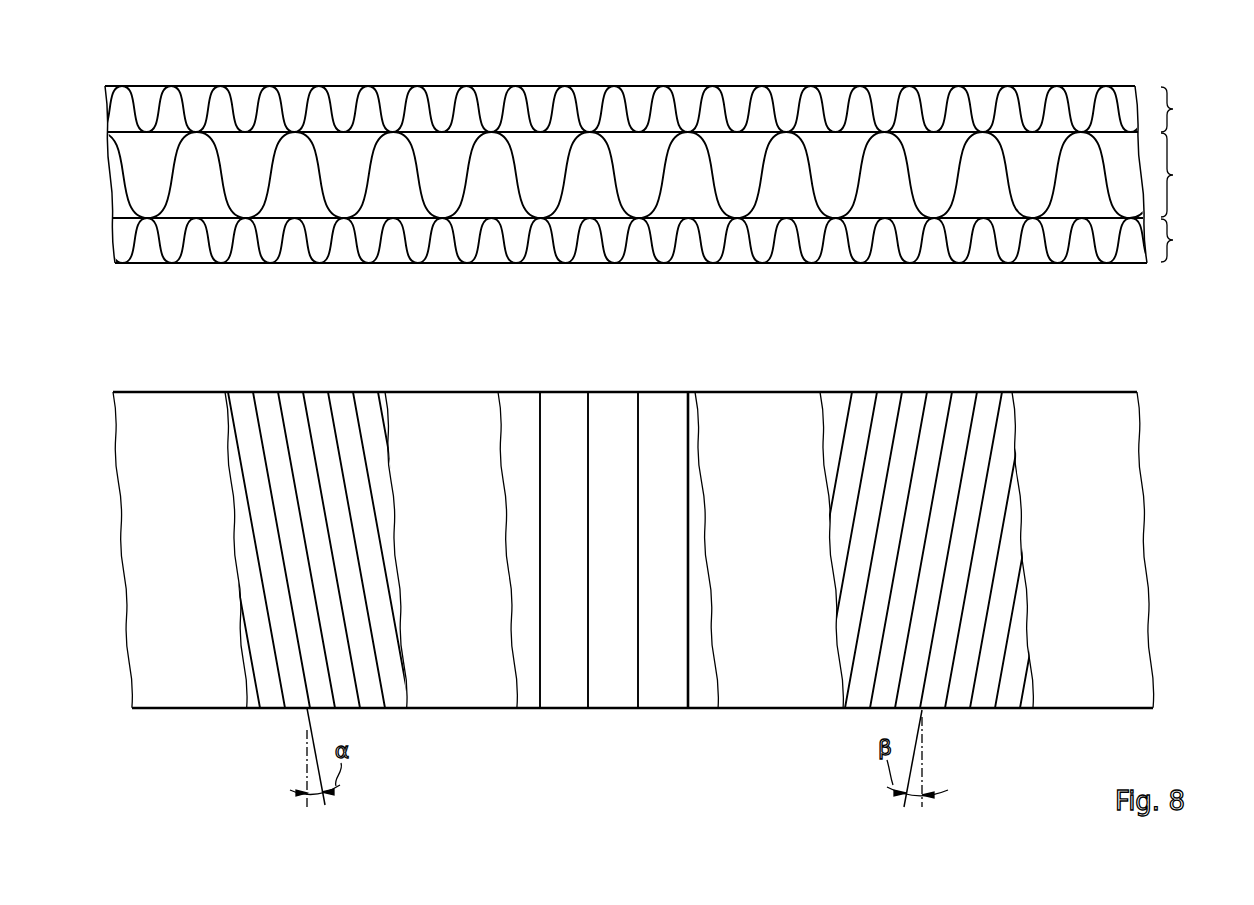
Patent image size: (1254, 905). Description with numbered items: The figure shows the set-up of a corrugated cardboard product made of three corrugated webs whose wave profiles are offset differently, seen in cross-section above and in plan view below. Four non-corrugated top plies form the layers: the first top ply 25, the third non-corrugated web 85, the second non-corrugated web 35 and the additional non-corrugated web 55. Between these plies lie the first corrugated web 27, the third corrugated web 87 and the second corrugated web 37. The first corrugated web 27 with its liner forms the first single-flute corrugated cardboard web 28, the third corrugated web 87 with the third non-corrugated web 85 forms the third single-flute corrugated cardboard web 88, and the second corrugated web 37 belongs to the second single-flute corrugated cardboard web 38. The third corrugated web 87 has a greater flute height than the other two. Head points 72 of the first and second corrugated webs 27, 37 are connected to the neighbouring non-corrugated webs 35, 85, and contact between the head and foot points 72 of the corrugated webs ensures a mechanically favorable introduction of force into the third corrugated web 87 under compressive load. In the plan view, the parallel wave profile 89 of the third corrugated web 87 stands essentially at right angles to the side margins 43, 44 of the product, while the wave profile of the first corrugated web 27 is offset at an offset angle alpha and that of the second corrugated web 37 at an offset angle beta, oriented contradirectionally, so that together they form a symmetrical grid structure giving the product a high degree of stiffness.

The first top ply 25 is at (243, 86).
The first corrugated web 27 is at (290, 110).
The first single-flute corrugated cardboard web 28 is at (1175, 109).
The third non-corrugated web 85 is at (615, 128).
The third corrugated web 87 is at (522, 205).
The third single-flute corrugated cardboard web 88 is at (1175, 175).
The parallel wave profile 89 is at (607, 416).
The second non-corrugated web 35 is at (707, 222).
The second corrugated web 37 is at (801, 243).
The second single-flute corrugated cardboard web 38 is at (1175, 240).
The additional non-corrugated web 55 is at (1028, 266).
The head points 72 is at (168, 86).
The side margin 43 is at (446, 710).
The side margin 44 is at (444, 392).